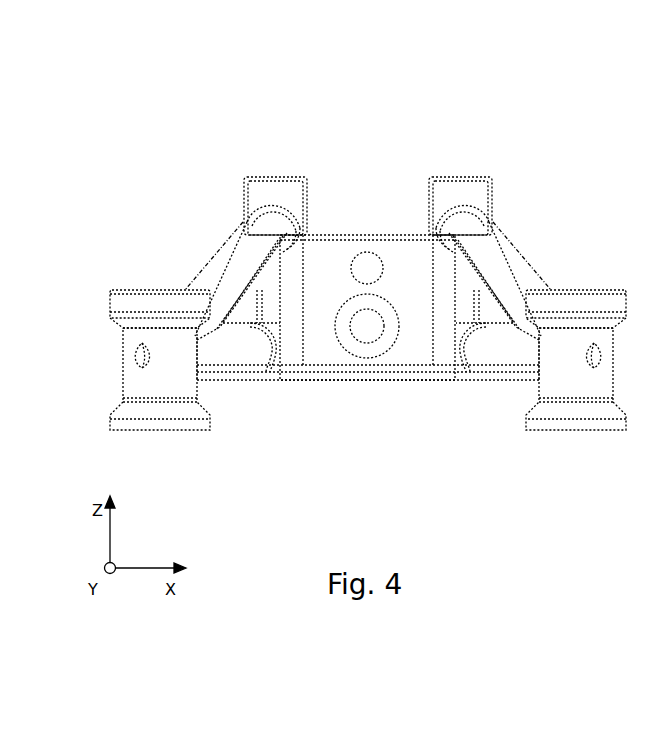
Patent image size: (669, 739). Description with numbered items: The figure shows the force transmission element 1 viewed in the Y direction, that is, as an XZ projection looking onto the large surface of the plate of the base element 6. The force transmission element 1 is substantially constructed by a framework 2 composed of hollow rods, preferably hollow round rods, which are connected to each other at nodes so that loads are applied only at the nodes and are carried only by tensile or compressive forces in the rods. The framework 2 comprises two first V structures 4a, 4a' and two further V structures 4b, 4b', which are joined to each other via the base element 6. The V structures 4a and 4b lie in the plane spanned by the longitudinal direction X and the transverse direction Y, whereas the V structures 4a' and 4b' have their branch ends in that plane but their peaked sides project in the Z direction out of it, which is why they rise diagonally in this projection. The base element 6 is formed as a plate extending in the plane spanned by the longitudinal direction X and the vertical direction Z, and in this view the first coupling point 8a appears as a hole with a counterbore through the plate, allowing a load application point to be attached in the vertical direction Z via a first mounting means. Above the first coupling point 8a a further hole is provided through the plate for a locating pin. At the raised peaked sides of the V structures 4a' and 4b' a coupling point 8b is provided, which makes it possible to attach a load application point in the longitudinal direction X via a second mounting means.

The force transmission element 1 is at (572, 68).
The framework 2 is at (518, 255).
The first V structure 4a is at (541, 371).
The further V structure 4b is at (195, 373).
The first V structure 4a' is at (546, 272).
The further V structure 4b' is at (194, 272).
The base element 6 is at (415, 350).
The first coupling point 8a is at (368, 350).
The coupling point 8b is at (450, 177).